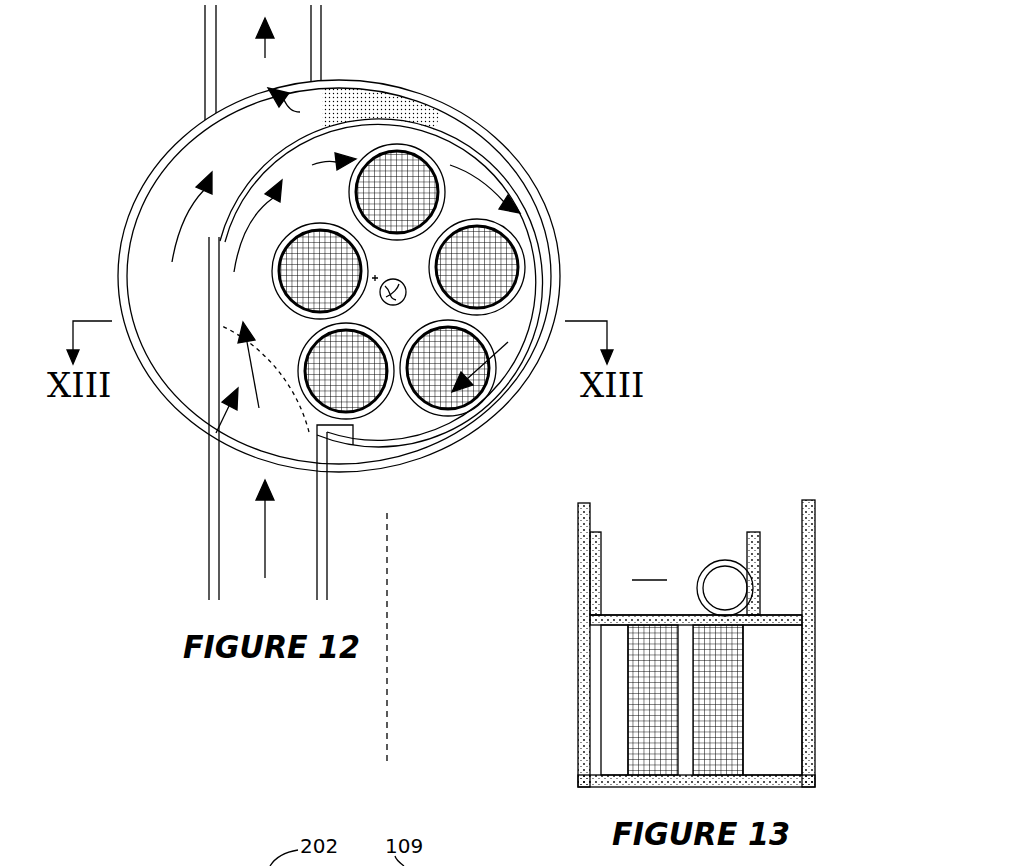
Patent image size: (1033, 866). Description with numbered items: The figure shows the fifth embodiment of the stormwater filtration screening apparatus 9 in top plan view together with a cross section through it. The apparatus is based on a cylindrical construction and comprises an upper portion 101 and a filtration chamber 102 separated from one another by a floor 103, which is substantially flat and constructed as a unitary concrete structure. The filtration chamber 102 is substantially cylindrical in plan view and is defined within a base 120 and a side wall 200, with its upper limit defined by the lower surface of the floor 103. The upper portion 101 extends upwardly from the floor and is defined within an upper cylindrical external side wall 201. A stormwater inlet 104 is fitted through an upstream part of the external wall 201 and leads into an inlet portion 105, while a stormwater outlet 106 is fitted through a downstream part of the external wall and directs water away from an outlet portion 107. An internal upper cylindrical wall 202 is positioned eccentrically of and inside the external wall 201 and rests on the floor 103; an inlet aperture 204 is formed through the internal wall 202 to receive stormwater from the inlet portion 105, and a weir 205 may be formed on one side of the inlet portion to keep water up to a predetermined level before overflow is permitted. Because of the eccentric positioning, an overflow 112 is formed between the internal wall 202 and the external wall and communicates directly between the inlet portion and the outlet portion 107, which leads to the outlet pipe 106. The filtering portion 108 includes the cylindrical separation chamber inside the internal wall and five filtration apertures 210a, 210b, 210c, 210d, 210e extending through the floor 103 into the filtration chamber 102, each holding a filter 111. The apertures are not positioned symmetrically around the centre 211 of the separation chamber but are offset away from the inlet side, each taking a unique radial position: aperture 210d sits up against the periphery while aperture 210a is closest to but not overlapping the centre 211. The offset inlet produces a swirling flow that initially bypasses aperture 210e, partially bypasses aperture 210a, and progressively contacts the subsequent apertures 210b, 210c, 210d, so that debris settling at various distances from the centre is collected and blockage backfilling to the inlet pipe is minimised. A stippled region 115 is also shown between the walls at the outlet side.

In FIG. 12, the heat exchanger assembly 9 is at (473, 203).
In FIG. 13, the upper portion 101 is at (837, 559).
In FIG. 13, the filtration chamber 102 is at (787, 680).
In FIG. 13, the floor 103 is at (787, 611).
In FIG. 12, the stormwater inlet 104 is at (290, 560).
In FIG. 12, the inlet portion 105 is at (287, 445).
In FIG. 12, the stormwater outlet 106 is at (273, 68).
In FIG. 12, the outlet portion 107 is at (258, 146).
In FIG. 13, the filtering portion 108 is at (610, 668).
In FIG. 13, the filter 111 is at (657, 733).
In FIG. 12, the overflow 112 is at (150, 243).
In FIG. 12, the filler section 115 is at (357, 100).
In FIG. 13, the base 120 is at (780, 773).
In FIG. 13, the side wall 200 is at (817, 720).
In FIG. 12, the upper cylindrical external side wall 201 is at (423, 93).
In FIG. 13, the upper cylindrical external side wall 201 is at (817, 540).
In FIG. 13, the internal upper cylindrical wall 202 is at (600, 540).
In FIG. 12, the inlet aperture 204 is at (210, 437).
In FIG. 12, the weir 205 is at (207, 393).
In FIG. 12, the first filtration aperture 210a is at (308, 268).
In FIG. 12, the filtration aperture 210b is at (403, 192).
In FIG. 12, the filtration aperture 210c is at (487, 273).
In FIG. 12, the filtration aperture 210d is at (446, 410).
In FIG. 12, the filtration aperture 210e is at (338, 373).
In FIG. 12, the centre of the separation chamber 211 is at (405, 297).